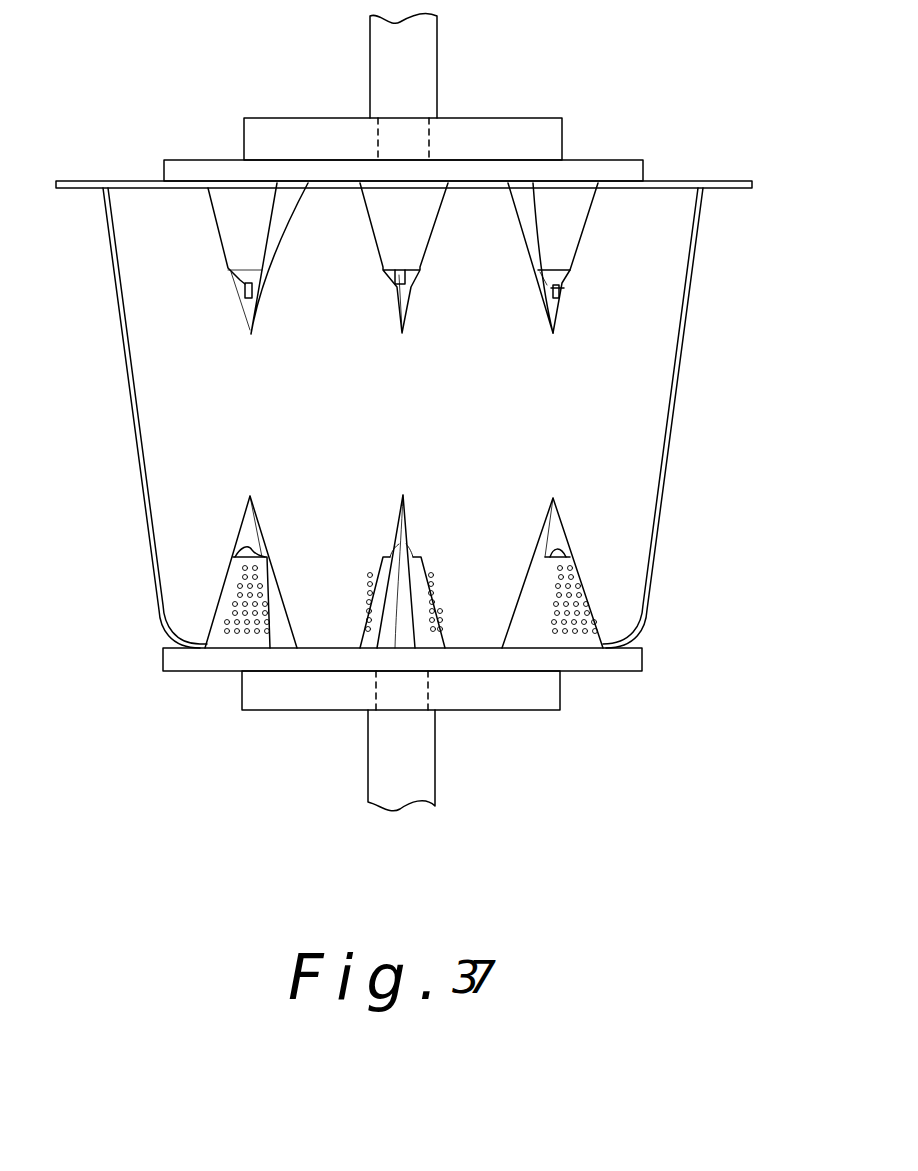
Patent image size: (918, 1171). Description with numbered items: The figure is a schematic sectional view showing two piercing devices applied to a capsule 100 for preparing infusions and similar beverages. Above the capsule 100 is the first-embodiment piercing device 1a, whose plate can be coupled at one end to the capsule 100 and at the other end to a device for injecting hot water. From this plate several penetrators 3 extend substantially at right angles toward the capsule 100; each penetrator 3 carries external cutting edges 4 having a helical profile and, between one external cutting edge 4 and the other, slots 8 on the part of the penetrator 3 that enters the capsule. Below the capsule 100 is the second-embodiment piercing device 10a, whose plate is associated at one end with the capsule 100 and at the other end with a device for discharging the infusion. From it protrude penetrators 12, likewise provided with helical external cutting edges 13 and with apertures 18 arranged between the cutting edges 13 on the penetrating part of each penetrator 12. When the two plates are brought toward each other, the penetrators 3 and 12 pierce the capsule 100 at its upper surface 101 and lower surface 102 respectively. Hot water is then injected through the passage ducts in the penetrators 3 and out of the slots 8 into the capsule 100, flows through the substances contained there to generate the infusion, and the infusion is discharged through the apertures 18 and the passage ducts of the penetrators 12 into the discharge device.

The piercing device 1a is at (220, 113).
The upper surface 101 is at (458, 188).
The capsule 100 is at (668, 468).
The piercing device 10a is at (250, 733).
The lower surface 102 is at (463, 648).
The penetrator 3 is at (228, 256).
The external cutting edge 4 is at (262, 293).
The slot 8 is at (243, 290).
The penetrator 12 is at (232, 511).
The external cutting edge 13 is at (268, 537).
The aperture 18 is at (233, 602).